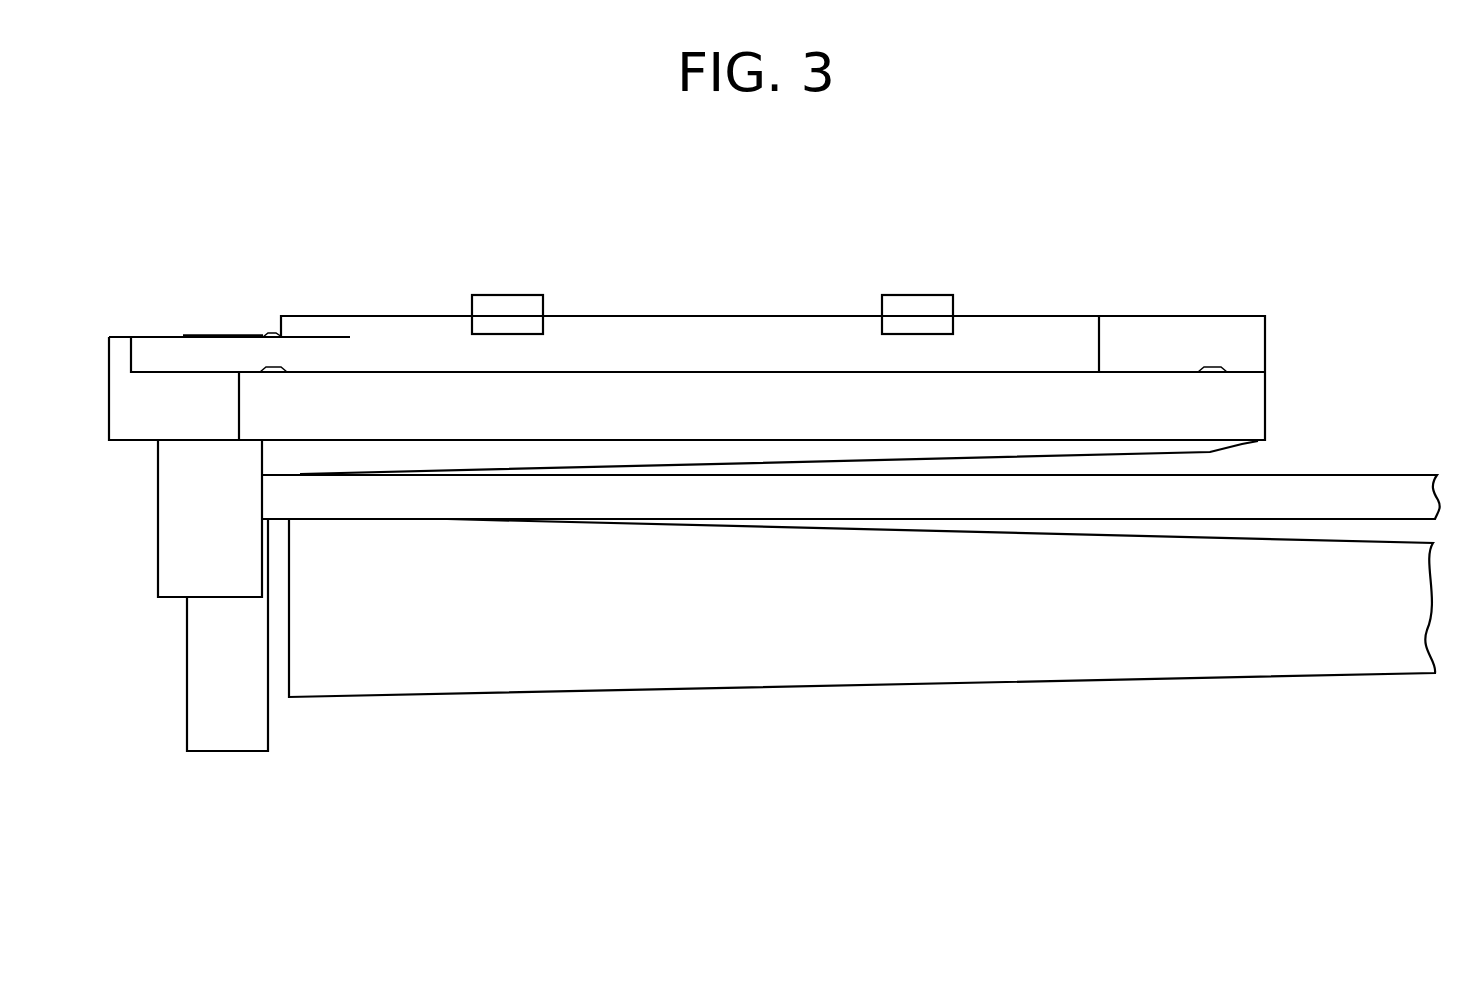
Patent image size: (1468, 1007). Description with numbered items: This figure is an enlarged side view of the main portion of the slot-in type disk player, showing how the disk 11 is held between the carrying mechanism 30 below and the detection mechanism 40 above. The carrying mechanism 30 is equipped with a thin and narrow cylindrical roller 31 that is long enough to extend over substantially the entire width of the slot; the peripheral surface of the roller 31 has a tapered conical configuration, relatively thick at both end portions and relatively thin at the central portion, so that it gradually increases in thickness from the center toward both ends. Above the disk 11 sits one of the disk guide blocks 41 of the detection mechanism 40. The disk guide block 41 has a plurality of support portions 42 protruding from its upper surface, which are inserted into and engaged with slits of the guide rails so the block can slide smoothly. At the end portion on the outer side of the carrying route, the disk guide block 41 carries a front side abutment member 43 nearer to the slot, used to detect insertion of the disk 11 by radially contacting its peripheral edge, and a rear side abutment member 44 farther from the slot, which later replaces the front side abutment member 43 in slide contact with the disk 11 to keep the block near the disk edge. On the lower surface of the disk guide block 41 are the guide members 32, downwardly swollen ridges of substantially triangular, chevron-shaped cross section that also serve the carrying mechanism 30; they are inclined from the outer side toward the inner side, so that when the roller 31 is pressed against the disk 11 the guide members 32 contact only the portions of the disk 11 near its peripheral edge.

The disk 11 is at (1320, 475).
The carrying mechanism 30 is at (862, 647).
The roller 31 is at (813, 690).
The guide members 32 is at (396, 458).
The detection mechanism 40 is at (729, 292).
The disk guide blocks 41 is at (1141, 314).
The support portions 42 is at (508, 295).
The front side abutment members 43 is at (166, 521).
The rear side abutment members 44 is at (190, 668).